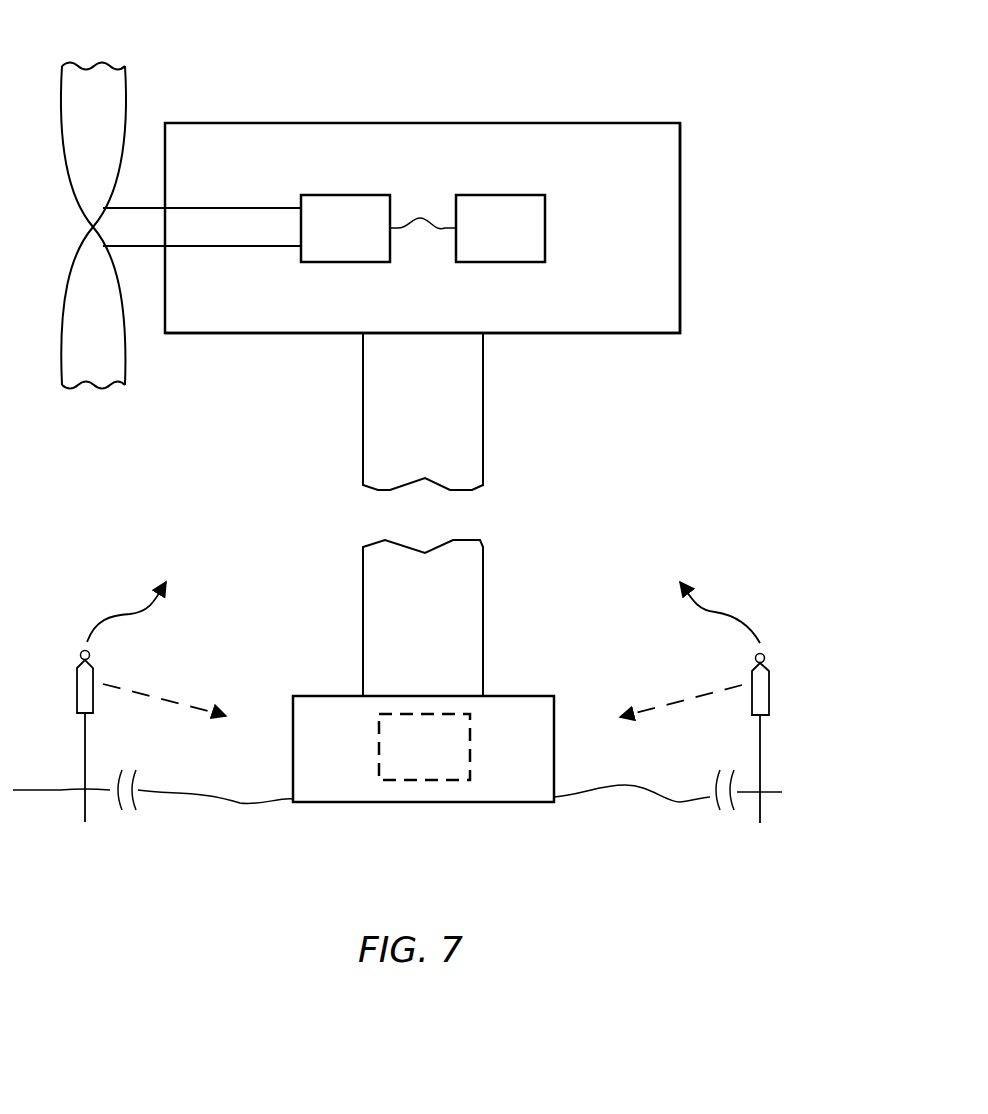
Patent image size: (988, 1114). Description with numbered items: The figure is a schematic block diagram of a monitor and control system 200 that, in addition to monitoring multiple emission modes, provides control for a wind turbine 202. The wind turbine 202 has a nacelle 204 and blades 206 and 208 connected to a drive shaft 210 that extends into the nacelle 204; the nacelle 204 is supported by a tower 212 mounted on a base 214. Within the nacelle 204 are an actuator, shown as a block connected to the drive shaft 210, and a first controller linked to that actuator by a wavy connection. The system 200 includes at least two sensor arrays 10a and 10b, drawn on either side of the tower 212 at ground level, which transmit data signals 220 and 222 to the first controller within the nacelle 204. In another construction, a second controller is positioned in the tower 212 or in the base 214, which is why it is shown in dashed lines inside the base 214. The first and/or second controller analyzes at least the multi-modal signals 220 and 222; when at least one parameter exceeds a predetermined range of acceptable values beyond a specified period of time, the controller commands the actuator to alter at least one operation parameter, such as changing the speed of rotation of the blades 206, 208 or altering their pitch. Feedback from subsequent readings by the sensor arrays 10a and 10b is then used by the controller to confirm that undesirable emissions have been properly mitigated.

The monitor and control system 200 is at (596, 78).
The wind turbine 202 is at (375, 86).
The nacelle 204 is at (613, 338).
The blade 206 is at (104, 83).
The blade 208 is at (112, 362).
The drive shaft 210 is at (198, 220).
The tower 212 is at (483, 452).
The base 214 is at (533, 696).
The data signal 220 is at (128, 614).
The data signal 222 is at (707, 612).
The sensor array 10a is at (57, 670).
The sensor array 10b is at (791, 644).